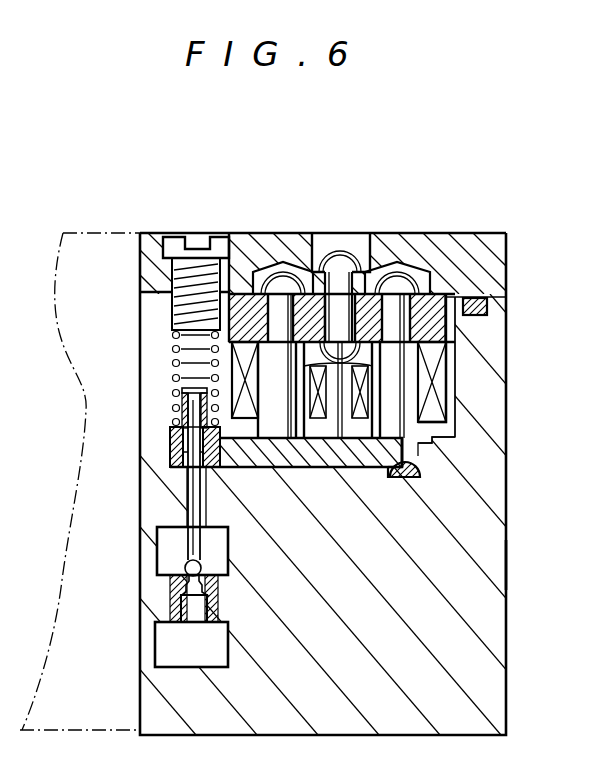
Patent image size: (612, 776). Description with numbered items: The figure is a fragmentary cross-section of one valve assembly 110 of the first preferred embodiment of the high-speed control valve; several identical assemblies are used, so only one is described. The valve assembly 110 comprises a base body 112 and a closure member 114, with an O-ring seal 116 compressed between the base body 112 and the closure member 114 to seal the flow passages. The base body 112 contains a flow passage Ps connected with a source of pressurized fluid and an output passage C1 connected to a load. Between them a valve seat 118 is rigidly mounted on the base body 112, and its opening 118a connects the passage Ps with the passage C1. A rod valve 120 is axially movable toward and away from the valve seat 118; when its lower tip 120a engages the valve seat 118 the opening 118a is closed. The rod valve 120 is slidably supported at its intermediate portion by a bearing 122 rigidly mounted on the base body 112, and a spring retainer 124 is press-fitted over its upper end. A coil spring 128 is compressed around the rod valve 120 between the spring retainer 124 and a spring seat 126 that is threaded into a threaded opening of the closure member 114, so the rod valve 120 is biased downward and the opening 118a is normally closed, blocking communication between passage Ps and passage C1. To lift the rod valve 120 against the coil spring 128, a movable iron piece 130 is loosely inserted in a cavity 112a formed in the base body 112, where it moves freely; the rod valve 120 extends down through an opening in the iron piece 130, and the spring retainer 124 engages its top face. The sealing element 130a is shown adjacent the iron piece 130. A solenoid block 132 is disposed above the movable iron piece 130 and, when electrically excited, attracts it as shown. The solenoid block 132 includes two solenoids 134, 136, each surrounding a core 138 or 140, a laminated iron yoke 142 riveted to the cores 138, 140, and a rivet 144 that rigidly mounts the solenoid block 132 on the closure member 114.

The valve assembly 110 is at (506, 563).
The base body 112 is at (490, 668).
The cavity 112a is at (440, 447).
The closure member 114 is at (481, 248).
The O-ring seal 116 is at (488, 301).
The valve seat 118 is at (183, 588).
The opening 118a is at (215, 605).
The rod valve 120 is at (168, 560).
The lower tip 120a is at (200, 566).
The bearing 122 is at (173, 498).
The spring retainer 124 is at (172, 432).
The spring seat 126 is at (178, 316).
The coil spring 128 is at (178, 348).
The movable iron piece 130 is at (384, 466).
The seal ring 130a is at (180, 461).
The solenoid block 132 is at (449, 377).
The solenoid 134 is at (350, 468).
The solenoid 136 is at (433, 404).
The core 138 is at (277, 432).
The core 140 is at (450, 429).
The laminated iron yoke 142 is at (424, 284).
The rivet 144 is at (336, 262).
The flow passage Ps is at (168, 533).
The output passage C1 is at (175, 650).